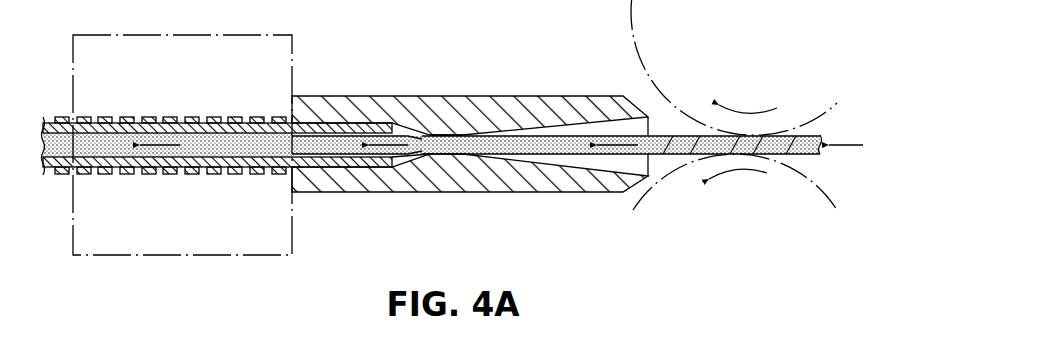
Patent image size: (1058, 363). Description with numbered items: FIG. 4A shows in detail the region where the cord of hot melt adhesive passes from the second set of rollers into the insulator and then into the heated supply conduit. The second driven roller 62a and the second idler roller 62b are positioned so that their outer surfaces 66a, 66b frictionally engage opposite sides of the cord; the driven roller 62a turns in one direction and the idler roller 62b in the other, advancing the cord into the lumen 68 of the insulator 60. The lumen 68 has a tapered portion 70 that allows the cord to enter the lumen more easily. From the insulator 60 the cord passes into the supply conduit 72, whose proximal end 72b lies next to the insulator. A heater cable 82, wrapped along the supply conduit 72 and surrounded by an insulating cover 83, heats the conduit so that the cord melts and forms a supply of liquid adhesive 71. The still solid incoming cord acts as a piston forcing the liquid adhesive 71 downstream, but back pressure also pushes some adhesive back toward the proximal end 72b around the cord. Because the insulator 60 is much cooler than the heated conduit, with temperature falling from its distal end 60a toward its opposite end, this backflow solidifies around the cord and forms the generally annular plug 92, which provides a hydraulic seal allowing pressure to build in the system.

The insulator 60 is at (470, 111).
The distal end of the insulator 60a is at (303, 97).
The second driven roller 62a is at (761, 67).
The second idler roller 62b is at (761, 231).
The outer surface of the second driven roller 66a is at (633, 31).
The outer surface of the second idler roller 66b is at (632, 217).
The lumen 68 is at (462, 125).
The tapered portion 70 is at (648, 157).
The liquid adhesive 71 is at (93, 143).
The supply conduit 72 is at (160, 168).
The proximal end of the supply conduit 72b is at (379, 128).
The heater cable 82 is at (192, 117).
The insulating cover 83 is at (197, 255).
The annular plug 92 is at (405, 156).